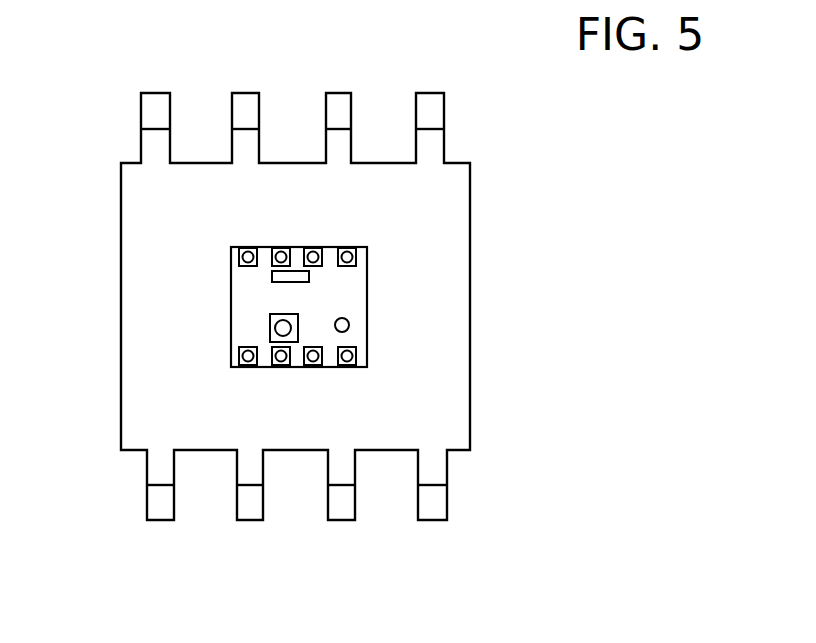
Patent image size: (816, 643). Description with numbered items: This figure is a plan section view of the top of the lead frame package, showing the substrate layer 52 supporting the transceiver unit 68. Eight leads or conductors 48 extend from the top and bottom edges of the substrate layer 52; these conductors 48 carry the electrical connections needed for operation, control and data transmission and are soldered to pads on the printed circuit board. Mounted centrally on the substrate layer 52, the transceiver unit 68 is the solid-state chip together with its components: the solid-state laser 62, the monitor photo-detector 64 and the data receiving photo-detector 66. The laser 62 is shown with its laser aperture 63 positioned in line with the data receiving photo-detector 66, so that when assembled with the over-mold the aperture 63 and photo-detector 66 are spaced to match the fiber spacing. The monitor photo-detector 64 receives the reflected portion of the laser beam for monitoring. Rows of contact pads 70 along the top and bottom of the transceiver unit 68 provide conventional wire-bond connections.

The conductors 48 is at (235, 92).
The substrate layer 52 is at (471, 276).
The solid-state laser 62 is at (262, 338).
The laser aperture 63 is at (270, 316).
The monitor photo-detector 64 is at (303, 283).
The data receiving photo-detector 66 is at (349, 328).
The transceiver unit 68 is at (368, 272).
The contact pads 70 is at (283, 246).